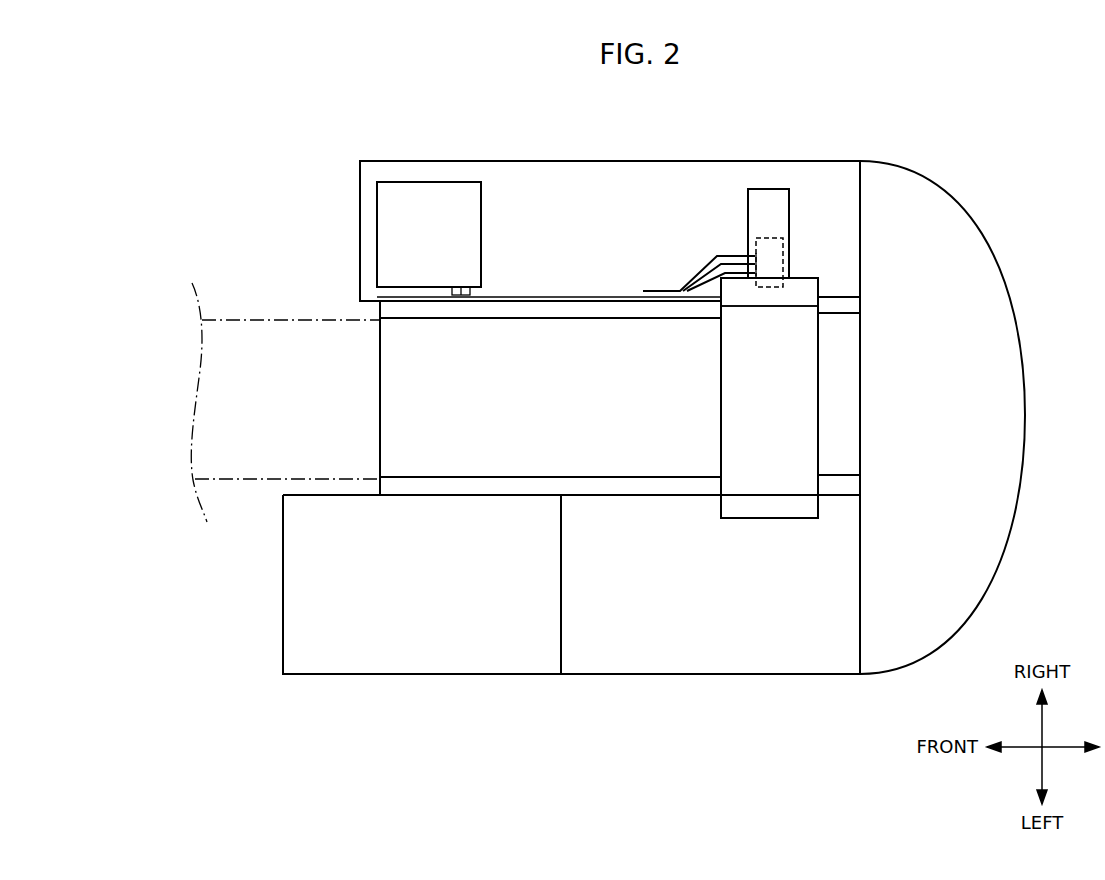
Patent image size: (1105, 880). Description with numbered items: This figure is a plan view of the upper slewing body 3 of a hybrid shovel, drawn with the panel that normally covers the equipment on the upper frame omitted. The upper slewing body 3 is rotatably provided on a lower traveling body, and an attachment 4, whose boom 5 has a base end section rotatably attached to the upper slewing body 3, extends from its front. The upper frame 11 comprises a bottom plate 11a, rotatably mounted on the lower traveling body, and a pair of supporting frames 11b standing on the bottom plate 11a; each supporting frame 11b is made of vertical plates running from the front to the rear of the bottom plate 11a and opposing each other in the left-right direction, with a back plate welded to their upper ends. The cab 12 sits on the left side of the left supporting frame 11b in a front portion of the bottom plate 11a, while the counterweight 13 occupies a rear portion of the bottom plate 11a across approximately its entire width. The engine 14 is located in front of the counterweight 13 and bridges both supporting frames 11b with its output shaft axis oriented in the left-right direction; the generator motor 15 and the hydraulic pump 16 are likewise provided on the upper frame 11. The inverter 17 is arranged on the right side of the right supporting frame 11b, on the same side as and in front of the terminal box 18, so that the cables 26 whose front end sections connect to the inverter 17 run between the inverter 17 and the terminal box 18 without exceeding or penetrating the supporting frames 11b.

The upper slewing body 3 is at (976, 120).
The attachment 4 is at (285, 382).
The boom 5 is at (280, 318).
The upper frame 11 is at (681, 391).
The bottom plate 11a is at (843, 392).
The supporting frames 11b is at (850, 305).
The cab 12 is at (340, 676).
The counterweight 13 is at (1027, 402).
The engine 14 is at (720, 392).
The generator motor 15 is at (769, 300).
The hydraulic pump 16 is at (790, 198).
The inverter 17 is at (482, 222).
The terminal box 18 is at (784, 244).
The cables 26 is at (735, 272).